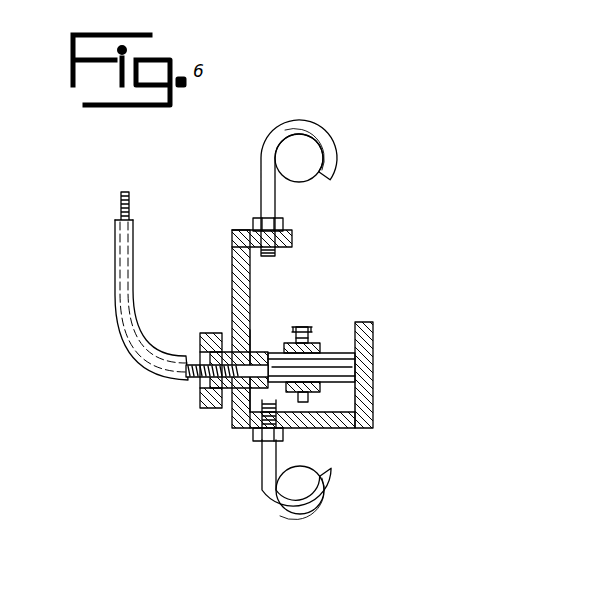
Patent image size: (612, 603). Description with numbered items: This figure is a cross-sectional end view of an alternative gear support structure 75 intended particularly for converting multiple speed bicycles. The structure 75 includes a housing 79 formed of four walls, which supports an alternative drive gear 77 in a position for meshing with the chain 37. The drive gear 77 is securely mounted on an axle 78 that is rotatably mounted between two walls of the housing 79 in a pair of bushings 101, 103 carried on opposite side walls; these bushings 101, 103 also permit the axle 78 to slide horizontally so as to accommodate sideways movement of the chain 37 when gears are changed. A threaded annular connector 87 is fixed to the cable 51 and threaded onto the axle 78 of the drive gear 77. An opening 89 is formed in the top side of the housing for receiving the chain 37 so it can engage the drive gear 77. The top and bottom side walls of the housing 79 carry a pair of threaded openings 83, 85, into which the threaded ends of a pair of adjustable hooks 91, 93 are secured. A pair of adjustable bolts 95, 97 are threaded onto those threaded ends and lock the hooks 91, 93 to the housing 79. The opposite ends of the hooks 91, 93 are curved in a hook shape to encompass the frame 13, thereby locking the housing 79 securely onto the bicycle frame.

The frame 13 is at (312, 134).
The chain 37 is at (304, 327).
The cable 51 is at (197, 362).
The gear support structure 75 is at (432, 419).
The drive gear 77 is at (325, 353).
The axle 78 is at (339, 397).
The housing 79 is at (226, 273).
The threaded opening 83 is at (248, 232).
The threaded opening 85 is at (284, 421).
The threaded annular connector 87 is at (203, 407).
The opening 89 is at (352, 246).
The adjustable hook 91 is at (272, 126).
The adjustable hook 93 is at (270, 500).
The adjustable bolt 95 is at (284, 228).
The adjustable bolt 97 is at (255, 434).
The bushing 101 is at (244, 340).
The bushing 103 is at (375, 339).